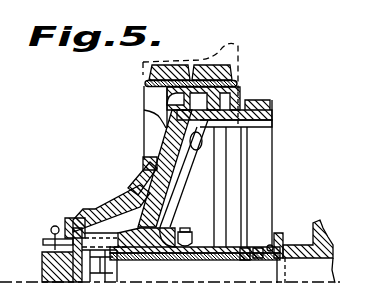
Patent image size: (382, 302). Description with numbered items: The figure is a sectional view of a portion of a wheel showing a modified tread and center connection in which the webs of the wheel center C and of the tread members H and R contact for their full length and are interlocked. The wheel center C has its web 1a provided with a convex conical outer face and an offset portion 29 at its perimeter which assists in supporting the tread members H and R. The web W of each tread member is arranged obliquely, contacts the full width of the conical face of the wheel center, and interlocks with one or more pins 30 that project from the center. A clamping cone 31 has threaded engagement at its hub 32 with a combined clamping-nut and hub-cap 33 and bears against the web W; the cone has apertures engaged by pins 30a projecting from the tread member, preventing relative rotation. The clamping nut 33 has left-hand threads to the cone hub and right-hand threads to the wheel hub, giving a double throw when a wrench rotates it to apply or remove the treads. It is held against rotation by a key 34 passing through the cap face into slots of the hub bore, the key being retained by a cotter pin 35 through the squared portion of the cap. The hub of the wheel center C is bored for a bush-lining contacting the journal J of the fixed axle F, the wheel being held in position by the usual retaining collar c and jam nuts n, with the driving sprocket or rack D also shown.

The tread member R is at (199, 57).
The tread member H is at (237, 70).
The offset portion 29 is at (238, 92).
The driving sprocket or rack D is at (272, 104).
The web 1a is at (190, 153).
The pins 30 is at (173, 110).
The web W is at (168, 129).
The pins 30a is at (148, 162).
The clamping cone 31 is at (138, 190).
The hub 32 is at (87, 212).
The clamping nut and hub-cap 33 is at (72, 218).
The cotter pin 35 is at (53, 227).
The key 34 is at (44, 242).
The jam nuts n is at (43, 260).
The wheel center C is at (170, 210).
The retaining collar c is at (176, 227).
The journal or journal-bearing J is at (277, 235).
The fixed axle or wheel-pin F is at (328, 242).